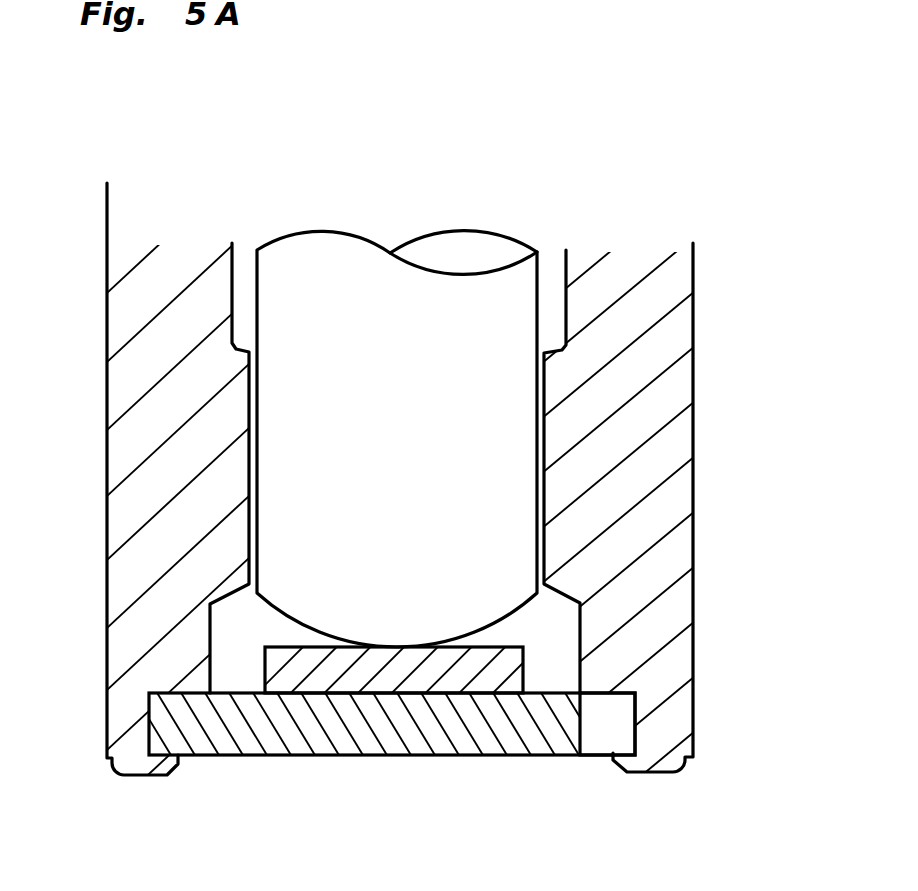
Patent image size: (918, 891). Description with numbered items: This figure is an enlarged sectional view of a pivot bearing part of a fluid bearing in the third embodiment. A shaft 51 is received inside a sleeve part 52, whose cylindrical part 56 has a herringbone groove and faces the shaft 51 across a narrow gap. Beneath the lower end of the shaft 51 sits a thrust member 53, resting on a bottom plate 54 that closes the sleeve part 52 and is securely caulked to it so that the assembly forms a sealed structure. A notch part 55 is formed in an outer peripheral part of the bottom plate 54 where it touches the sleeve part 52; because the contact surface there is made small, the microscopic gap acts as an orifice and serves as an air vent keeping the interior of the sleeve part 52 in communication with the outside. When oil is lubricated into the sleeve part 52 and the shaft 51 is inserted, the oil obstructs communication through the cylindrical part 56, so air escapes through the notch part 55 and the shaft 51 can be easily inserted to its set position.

The shaft 51 is at (431, 381).
The sleeve part 52 is at (399, 503).
The thrust member 53 is at (431, 745).
The bottom plate 54 is at (382, 770).
The notch part 55 is at (679, 724).
The cylindrical part 56 is at (503, 468).